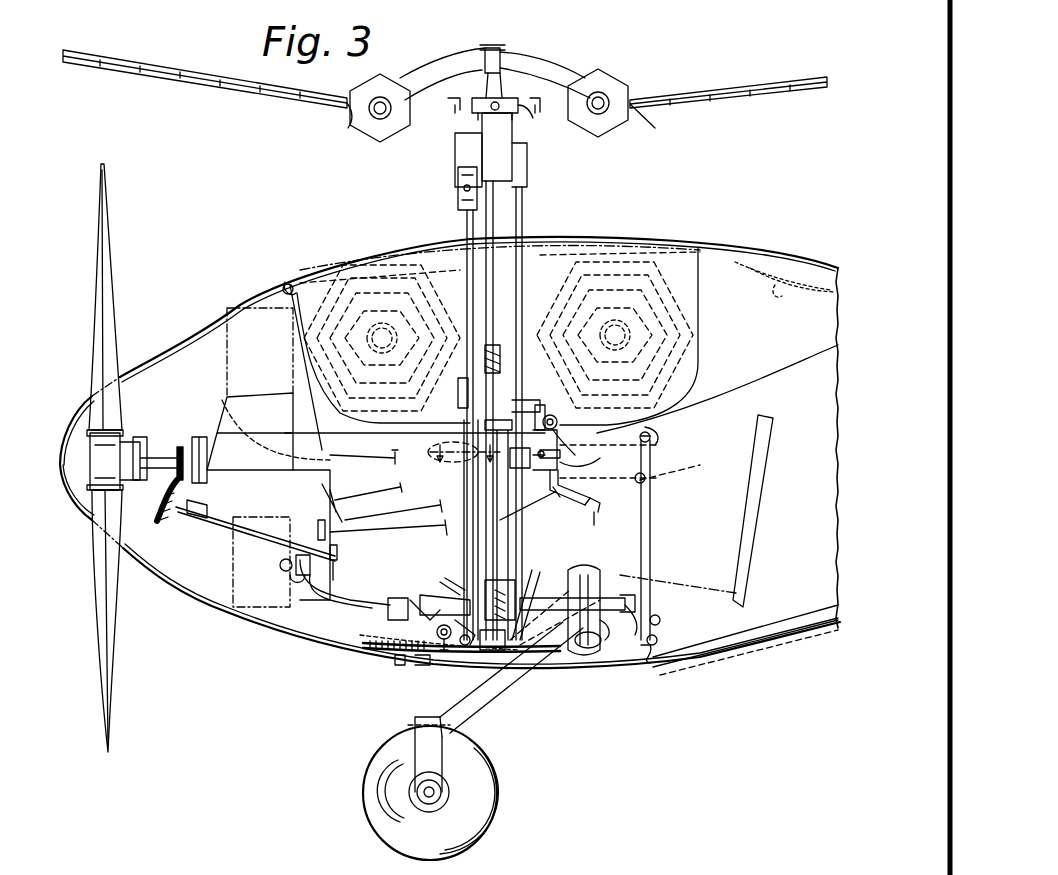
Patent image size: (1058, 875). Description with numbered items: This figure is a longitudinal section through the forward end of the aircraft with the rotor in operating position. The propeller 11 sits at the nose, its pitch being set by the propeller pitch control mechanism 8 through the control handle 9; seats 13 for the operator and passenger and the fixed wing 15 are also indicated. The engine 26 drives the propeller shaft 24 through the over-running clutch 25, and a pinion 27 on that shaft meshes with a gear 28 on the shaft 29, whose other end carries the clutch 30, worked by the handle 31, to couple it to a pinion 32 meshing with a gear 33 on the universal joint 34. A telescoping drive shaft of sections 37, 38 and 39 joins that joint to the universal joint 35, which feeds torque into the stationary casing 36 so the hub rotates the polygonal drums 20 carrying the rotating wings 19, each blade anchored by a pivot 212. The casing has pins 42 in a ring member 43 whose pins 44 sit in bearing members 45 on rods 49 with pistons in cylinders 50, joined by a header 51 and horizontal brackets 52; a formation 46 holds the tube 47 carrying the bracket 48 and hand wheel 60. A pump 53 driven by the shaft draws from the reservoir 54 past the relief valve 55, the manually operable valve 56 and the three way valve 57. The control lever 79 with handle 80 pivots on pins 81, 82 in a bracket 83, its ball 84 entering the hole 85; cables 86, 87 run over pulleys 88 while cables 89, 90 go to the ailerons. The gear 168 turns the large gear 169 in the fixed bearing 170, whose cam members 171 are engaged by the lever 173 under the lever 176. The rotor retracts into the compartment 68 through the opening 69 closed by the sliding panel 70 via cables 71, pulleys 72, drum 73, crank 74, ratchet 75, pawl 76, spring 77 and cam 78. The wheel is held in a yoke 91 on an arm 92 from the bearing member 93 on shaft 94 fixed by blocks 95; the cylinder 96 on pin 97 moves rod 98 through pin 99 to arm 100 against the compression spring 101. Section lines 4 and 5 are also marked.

The section line 4- 4 is at (495, 107).
The section line 5- 5 is at (466, 455).
The propeller pitch control mechanism 8 is at (130, 480).
The control handle 9 is at (395, 460).
The propeller 11 is at (112, 670).
The seats 13 is at (752, 560).
The fixed wing 15 is at (671, 466).
The rotating wings 19 is at (208, 75).
The polygonal drums 20 is at (390, 136).
The propeller shaft 24 is at (158, 455).
The over-running clutch 25 is at (199, 437).
The engine 26 is at (250, 400).
The pinion 27 is at (180, 447).
The gear 28 is at (156, 526).
The shaft 29 is at (238, 525).
The clutch 30 is at (425, 598).
The handle 31 is at (556, 510).
The pinion 32 is at (445, 660).
The gear 33 is at (468, 660).
The universal joint 34 is at (445, 592).
The universal joint 35 is at (458, 196).
The stationary casing 36 is at (512, 154).
The drive shaft section 37 is at (464, 490).
The drive shaft section 38 is at (458, 392).
The drive shaft section 39 is at (466, 226).
The pins 42 is at (533, 118).
The ring member 43 is at (485, 95).
The pins 44 is at (498, 103).
The bearing members 45 is at (478, 118).
The formation 46 is at (527, 168).
The tube 47 is at (523, 200).
The bracket 48 is at (530, 404).
The rods 49 is at (502, 224).
The cylinders 50 is at (490, 520).
The header 51 is at (492, 682).
The horizontal brackets 52 is at (497, 364).
The pump 53 is at (290, 560).
The reservoir 54 is at (302, 493).
The automatic pressure relief valve 55 is at (288, 572).
The manually operable valve 56 is at (333, 538).
The three way valve 57 is at (340, 598).
The hand wheel 60 is at (551, 416).
The compartment 68 is at (700, 328).
The opening 69 is at (618, 246).
The sliding panel 70 is at (779, 233).
The cables 71 is at (580, 265).
The pulleys 72 is at (280, 283).
The drum 73 is at (340, 497).
The crank 74 is at (410, 507).
The ratchet 75 is at (330, 505).
The pawl 76 is at (322, 520).
The spring 77 is at (792, 288).
The cam 78 is at (340, 533).
The control lever 79 is at (610, 461).
The handle 80 is at (598, 515).
The pin 81 is at (584, 462).
The pin 82 is at (545, 458).
The bracket 83 is at (540, 455).
The ball 84 is at (557, 419).
The hole 85 is at (542, 450).
The cable 86 is at (655, 505).
The cable 87 is at (652, 524).
The pulleys 88 is at (652, 442).
The cable 89 is at (562, 445).
The cable 90 is at (562, 488).
The yoke 91 is at (415, 724).
The arm 92 is at (476, 705).
The bearing member 93 is at (590, 575).
The shaft 94 is at (585, 655).
The blocks 95 is at (585, 568).
The cylinder 96 is at (440, 578).
The pin 97 is at (388, 612).
The rod 98 is at (570, 578).
The pin 99 is at (634, 620).
The arm 100 is at (613, 630).
The compression spring 101 is at (500, 600).
The gear 168 is at (498, 660).
The large gear 169 is at (368, 652).
The fixed bearing 170 is at (402, 665).
The cylindrical cam members 171 is at (372, 636).
The lever 173 is at (422, 668).
The lever 176 is at (538, 593).
The pivot 212 is at (348, 128).